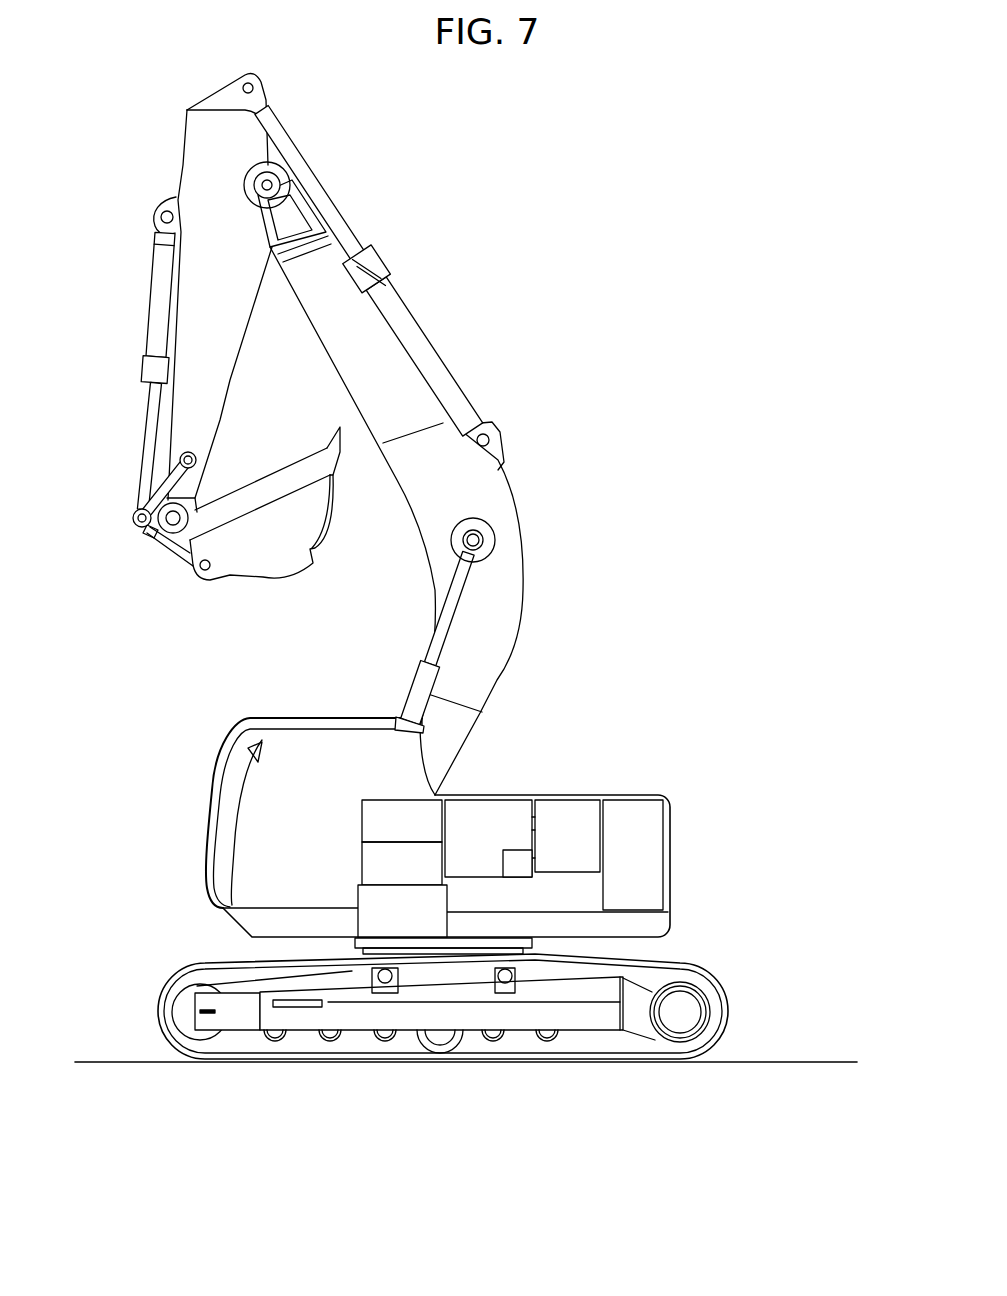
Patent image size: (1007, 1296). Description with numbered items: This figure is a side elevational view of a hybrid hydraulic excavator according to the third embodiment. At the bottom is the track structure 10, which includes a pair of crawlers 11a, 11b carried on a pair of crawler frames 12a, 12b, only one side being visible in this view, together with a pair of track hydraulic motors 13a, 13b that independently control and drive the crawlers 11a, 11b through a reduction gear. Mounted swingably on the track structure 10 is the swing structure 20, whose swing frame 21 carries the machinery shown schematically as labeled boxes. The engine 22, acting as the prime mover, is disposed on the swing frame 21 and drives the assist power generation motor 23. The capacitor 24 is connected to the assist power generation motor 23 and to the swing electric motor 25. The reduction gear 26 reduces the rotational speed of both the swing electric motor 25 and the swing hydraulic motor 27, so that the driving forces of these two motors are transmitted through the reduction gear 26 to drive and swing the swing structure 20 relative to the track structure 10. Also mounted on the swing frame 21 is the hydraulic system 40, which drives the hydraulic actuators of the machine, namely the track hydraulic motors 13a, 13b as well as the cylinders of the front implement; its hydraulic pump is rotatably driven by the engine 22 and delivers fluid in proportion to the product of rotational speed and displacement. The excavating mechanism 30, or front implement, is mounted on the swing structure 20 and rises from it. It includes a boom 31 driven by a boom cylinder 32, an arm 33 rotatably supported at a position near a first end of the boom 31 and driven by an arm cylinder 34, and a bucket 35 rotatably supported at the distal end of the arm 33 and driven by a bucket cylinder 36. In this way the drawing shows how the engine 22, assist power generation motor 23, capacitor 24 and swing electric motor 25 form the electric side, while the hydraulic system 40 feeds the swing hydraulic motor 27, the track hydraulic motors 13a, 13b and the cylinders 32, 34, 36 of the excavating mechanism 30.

The track structure 10 is at (172, 945).
The crawler 11a is at (512, 1006).
The crawler 11b is at (720, 990).
The crawler frame 12a is at (425, 1049).
The crawler frame 12b is at (412, 1010).
The track hydraulic motor 13a is at (688, 1056).
The track hydraulic motor 13b is at (682, 1020).
The swing structure 20 is at (207, 742).
The swing frame 21 is at (672, 925).
The engine 22 is at (572, 799).
The assist power generation motor 23 is at (517, 875).
The capacitor 24 is at (663, 822).
The swing electric motor 25 is at (362, 858).
The reduction gear 26 is at (363, 903).
The swing hydraulic motor 27 is at (362, 817).
The excavating mechanism 30 is at (440, 205).
The boom 31 is at (510, 575).
The boom cylinder 32 is at (427, 660).
The arm 33 is at (200, 143).
The arm cylinder 34 is at (428, 357).
The bucket 35 is at (273, 557).
The bucket cylinder 36 is at (162, 308).
The hydraulic system 40 is at (496, 798).